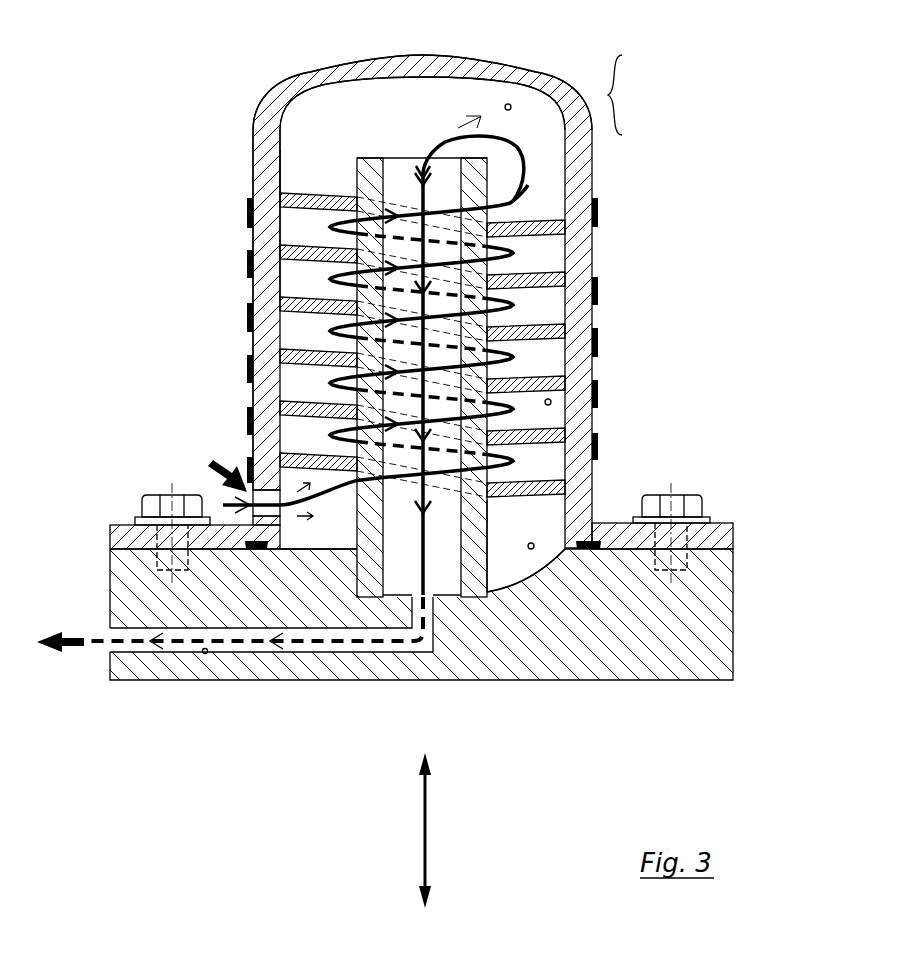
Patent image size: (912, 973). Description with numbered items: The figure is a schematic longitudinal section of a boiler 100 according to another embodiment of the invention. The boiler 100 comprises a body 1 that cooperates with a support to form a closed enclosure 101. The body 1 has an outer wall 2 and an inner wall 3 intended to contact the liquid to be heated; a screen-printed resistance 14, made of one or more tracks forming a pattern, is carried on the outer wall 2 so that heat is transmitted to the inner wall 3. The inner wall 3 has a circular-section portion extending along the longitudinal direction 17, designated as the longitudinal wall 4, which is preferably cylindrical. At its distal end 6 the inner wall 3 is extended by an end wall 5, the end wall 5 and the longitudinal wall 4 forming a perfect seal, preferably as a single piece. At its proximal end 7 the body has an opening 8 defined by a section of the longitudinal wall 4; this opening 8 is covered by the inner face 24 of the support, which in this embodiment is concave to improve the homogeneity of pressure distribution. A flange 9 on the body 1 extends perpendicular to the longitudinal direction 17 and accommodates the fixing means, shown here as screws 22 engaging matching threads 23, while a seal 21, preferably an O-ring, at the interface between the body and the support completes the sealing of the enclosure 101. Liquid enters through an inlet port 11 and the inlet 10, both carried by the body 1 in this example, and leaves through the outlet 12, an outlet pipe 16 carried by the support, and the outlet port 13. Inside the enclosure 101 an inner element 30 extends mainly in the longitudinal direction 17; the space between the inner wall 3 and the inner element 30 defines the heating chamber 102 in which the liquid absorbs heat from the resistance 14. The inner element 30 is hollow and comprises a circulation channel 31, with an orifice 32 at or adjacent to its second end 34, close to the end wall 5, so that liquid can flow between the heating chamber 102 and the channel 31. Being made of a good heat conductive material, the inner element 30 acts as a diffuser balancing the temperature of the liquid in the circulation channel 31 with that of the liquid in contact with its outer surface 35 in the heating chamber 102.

The body 1 is at (505, 66).
The closed enclosure 101 is at (510, 105).
The distal end 6 is at (623, 95).
The boiler 100 is at (715, 135).
The circulation channel 31 is at (516, 146).
The outer surface 35 is at (500, 203).
The end wall 5 is at (300, 100).
The inner wall 3 is at (280, 128).
The longitudinal wall 4 is at (280, 163).
The outer wall 2 is at (255, 243).
The screen-printed resistance 14 is at (252, 220).
The orifice 32 is at (375, 158).
The second end 34 is at (365, 157).
The inner element 30 is at (350, 515).
The heating chamber 102 is at (551, 401).
The inlet 10 is at (250, 488).
The inlet port 11 is at (207, 467).
The outlet pipe 16 is at (240, 682).
The flange 9 is at (735, 545).
The seal 21 is at (590, 540).
The screws 22 is at (702, 497).
The matching threads 23 is at (684, 562).
The proximal end 7 is at (534, 545).
The inner face 24 is at (540, 592).
The opening 8 is at (338, 552).
The outlet 12 is at (403, 600).
The outlet port 13 is at (72, 655).
The longitudinal direction 17 is at (426, 835).